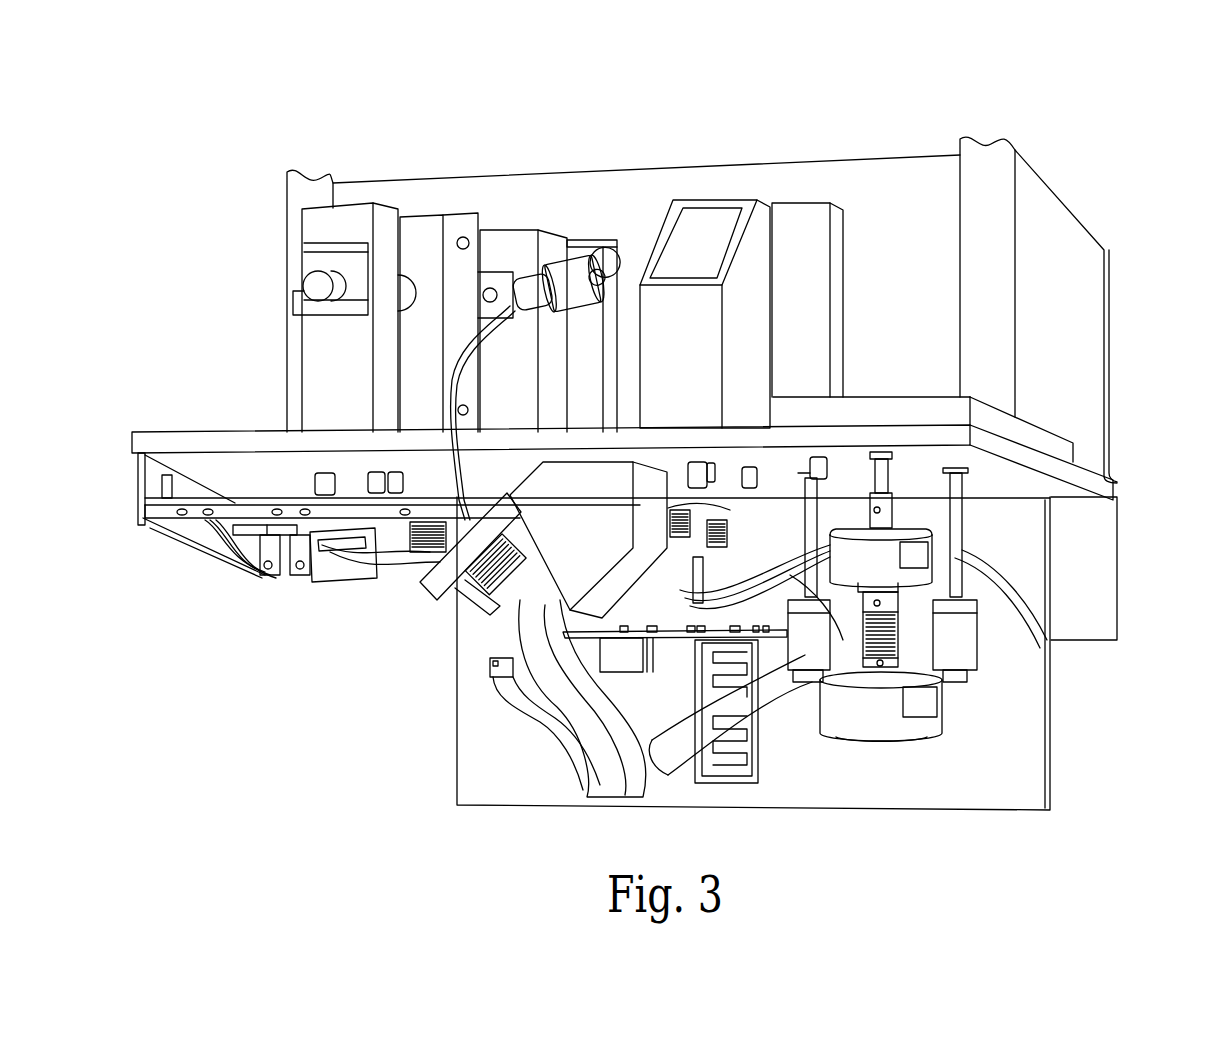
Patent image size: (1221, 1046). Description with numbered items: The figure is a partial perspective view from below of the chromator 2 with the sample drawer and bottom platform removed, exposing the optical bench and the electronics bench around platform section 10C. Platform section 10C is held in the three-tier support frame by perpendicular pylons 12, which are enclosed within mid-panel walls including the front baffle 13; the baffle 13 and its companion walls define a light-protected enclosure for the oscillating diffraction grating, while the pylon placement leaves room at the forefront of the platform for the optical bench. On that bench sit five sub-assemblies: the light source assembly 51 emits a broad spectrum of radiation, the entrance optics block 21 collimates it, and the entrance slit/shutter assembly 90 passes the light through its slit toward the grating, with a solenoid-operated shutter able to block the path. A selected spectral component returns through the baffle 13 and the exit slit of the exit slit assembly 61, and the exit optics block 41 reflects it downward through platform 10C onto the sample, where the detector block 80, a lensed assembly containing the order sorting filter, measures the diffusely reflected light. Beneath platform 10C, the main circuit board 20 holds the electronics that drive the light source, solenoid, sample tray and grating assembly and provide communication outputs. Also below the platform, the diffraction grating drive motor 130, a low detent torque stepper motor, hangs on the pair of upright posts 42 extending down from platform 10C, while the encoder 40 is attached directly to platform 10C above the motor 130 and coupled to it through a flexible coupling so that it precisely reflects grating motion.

The chromator 2 is at (208, 138).
The pylons 12 is at (290, 228).
The front baffle 13 is at (918, 268).
The platform section 10C is at (1108, 488).
The main circuit board 20 is at (230, 500).
The entrance optics block 21 is at (457, 213).
The encoder 40 is at (1033, 687).
The exit optics block 41 is at (722, 200).
The upright posts 42 is at (812, 580).
The light source assembly 51 is at (383, 205).
The exit slit assembly 61 is at (793, 203).
The detector block 80 is at (588, 518).
The entrance slit/shutter assembly 90 is at (518, 230).
The diffraction grating drive motor 130 is at (841, 716).